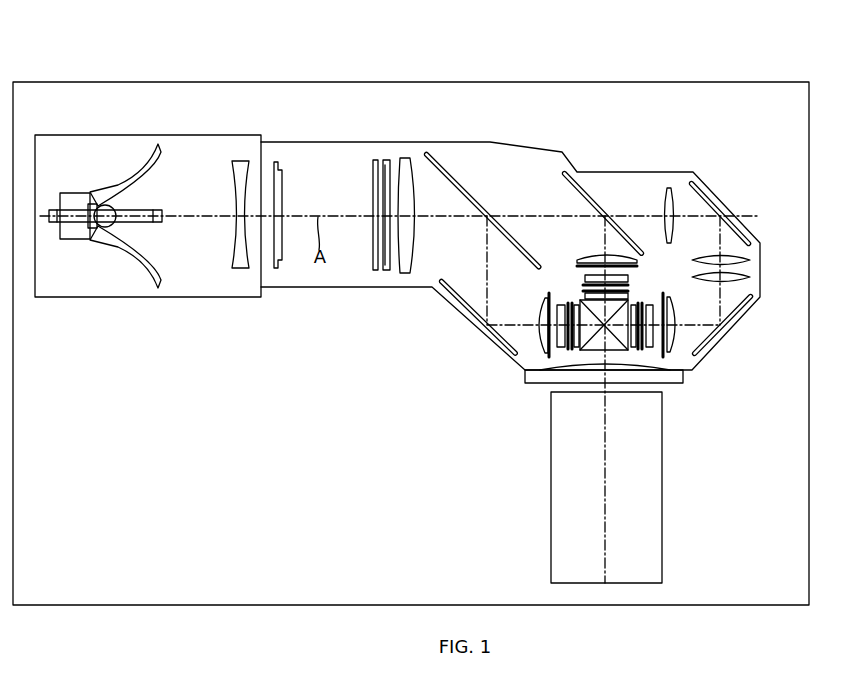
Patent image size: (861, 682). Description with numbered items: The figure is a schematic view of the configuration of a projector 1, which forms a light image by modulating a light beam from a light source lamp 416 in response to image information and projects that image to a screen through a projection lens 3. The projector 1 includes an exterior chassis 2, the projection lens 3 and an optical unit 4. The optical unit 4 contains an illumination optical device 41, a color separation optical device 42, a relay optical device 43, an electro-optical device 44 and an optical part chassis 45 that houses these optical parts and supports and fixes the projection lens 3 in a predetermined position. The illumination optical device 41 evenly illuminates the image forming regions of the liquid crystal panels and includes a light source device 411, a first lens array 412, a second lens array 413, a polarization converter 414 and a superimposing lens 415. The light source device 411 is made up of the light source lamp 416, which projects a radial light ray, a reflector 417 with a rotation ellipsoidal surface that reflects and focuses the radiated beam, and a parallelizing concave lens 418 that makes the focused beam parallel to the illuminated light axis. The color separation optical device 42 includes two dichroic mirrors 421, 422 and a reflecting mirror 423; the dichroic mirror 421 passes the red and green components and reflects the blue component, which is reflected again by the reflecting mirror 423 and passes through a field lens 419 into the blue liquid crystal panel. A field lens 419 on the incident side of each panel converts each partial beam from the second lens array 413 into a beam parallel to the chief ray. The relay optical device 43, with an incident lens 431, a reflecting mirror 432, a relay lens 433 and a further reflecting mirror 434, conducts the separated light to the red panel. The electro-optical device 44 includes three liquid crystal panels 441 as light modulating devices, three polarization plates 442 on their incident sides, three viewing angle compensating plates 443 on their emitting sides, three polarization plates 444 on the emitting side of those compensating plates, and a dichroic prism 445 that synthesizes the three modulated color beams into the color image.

The projector 1 is at (650, 58).
The exterior chassis 2 is at (810, 173).
The projection lens 3 is at (664, 498).
The optical unit 4 is at (383, 317).
The illumination optical device 41 is at (380, 117).
The light source device 411 is at (85, 49).
The first lens array 412 is at (283, 190).
The second lens array 413 is at (373, 162).
The polarization converter 414 is at (389, 162).
The superimposing lens 415 is at (410, 181).
The light source lamp 416 is at (140, 207).
The reflector 417 is at (142, 140).
The parallelizing concave lens 418 is at (238, 160).
The field lens 419 is at (583, 258).
The color separation optical device 42 is at (527, 167).
The dichroic mirror 421 is at (456, 172).
The dichroic mirror 422 is at (594, 198).
The reflecting mirror 423 is at (470, 302).
The relay optical device 43 is at (725, 193).
The incident lens 431 is at (670, 188).
The reflecting mirror 432 is at (735, 230).
The relay lens 433 is at (750, 277).
The reflecting mirror 434 is at (740, 312).
The electro-optical device 44 is at (668, 275).
The liquid crystal panel 441 is at (697, 425).
The polarization plate on the incident side 442 is at (578, 264).
The viewing angle compensating plate 443 is at (585, 285).
The polarization plate on the emitting side 444 is at (628, 295).
The dichroic prism 445 is at (610, 350).
The optical part chassis 45 is at (615, 172).